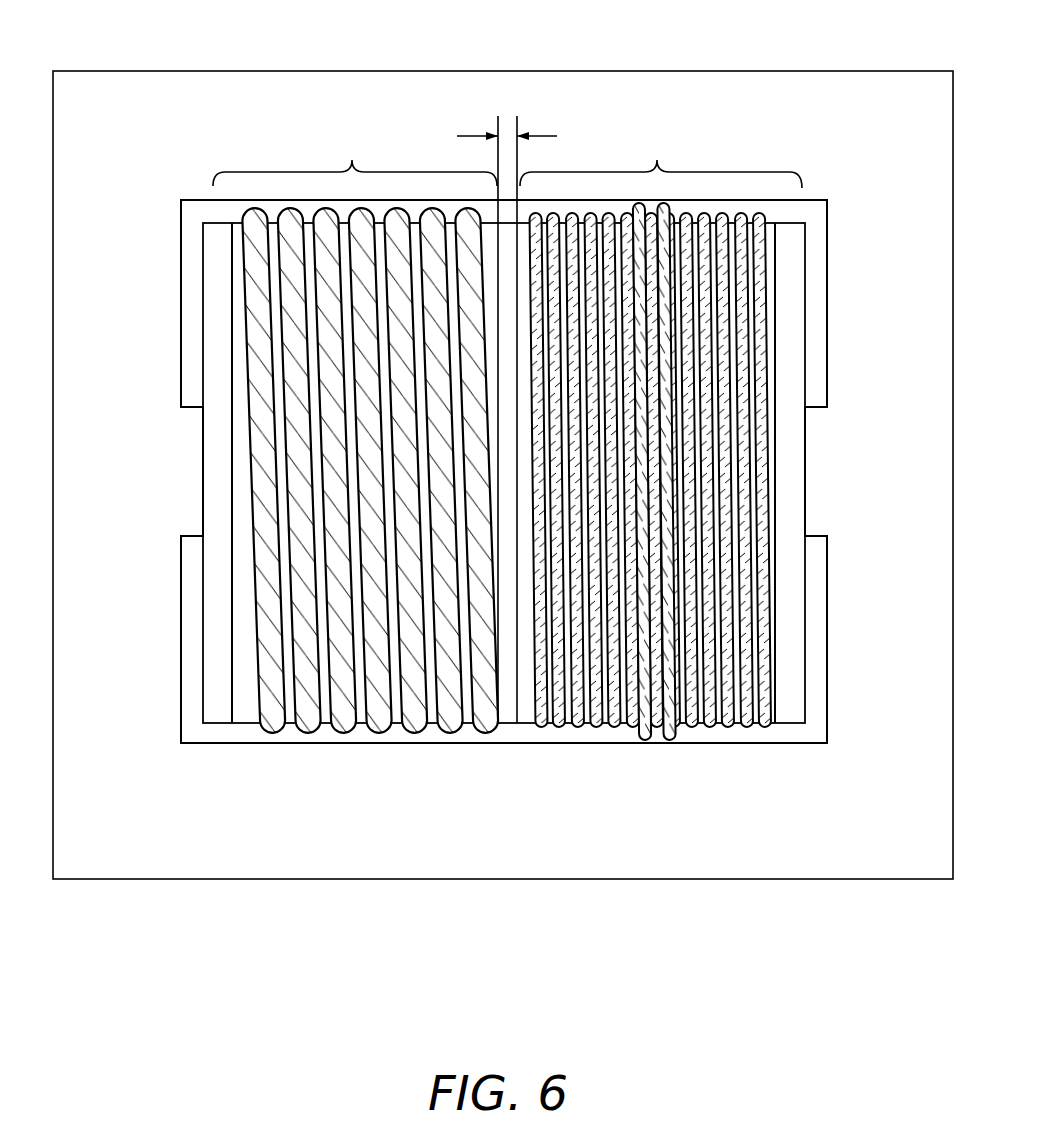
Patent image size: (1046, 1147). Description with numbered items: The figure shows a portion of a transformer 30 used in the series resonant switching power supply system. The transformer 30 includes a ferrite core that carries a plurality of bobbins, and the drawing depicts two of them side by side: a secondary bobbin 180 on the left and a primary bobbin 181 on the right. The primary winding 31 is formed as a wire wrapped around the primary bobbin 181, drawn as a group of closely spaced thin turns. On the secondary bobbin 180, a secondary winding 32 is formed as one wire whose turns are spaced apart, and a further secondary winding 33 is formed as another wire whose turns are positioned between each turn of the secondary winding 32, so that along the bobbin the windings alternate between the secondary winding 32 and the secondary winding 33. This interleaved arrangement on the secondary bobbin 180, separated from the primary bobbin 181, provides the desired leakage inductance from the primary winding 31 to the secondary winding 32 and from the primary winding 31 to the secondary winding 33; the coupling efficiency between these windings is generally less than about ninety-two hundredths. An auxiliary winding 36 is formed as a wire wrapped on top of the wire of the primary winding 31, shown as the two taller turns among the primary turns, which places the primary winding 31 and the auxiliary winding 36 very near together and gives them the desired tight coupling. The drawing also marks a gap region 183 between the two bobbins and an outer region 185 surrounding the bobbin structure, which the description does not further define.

The transformer 30 is at (503, 515).
The primary winding 31 is at (533, 758).
The secondary winding 32 is at (487, 723).
The secondary winding 33 is at (450, 722).
The auxiliary winding 36 is at (632, 750).
The secondary bobbin 180 is at (352, 160).
The primary bobbin 181 is at (657, 160).
The gap between windings 183 is at (508, 118).
The bobbin housing 185 is at (134, 477).